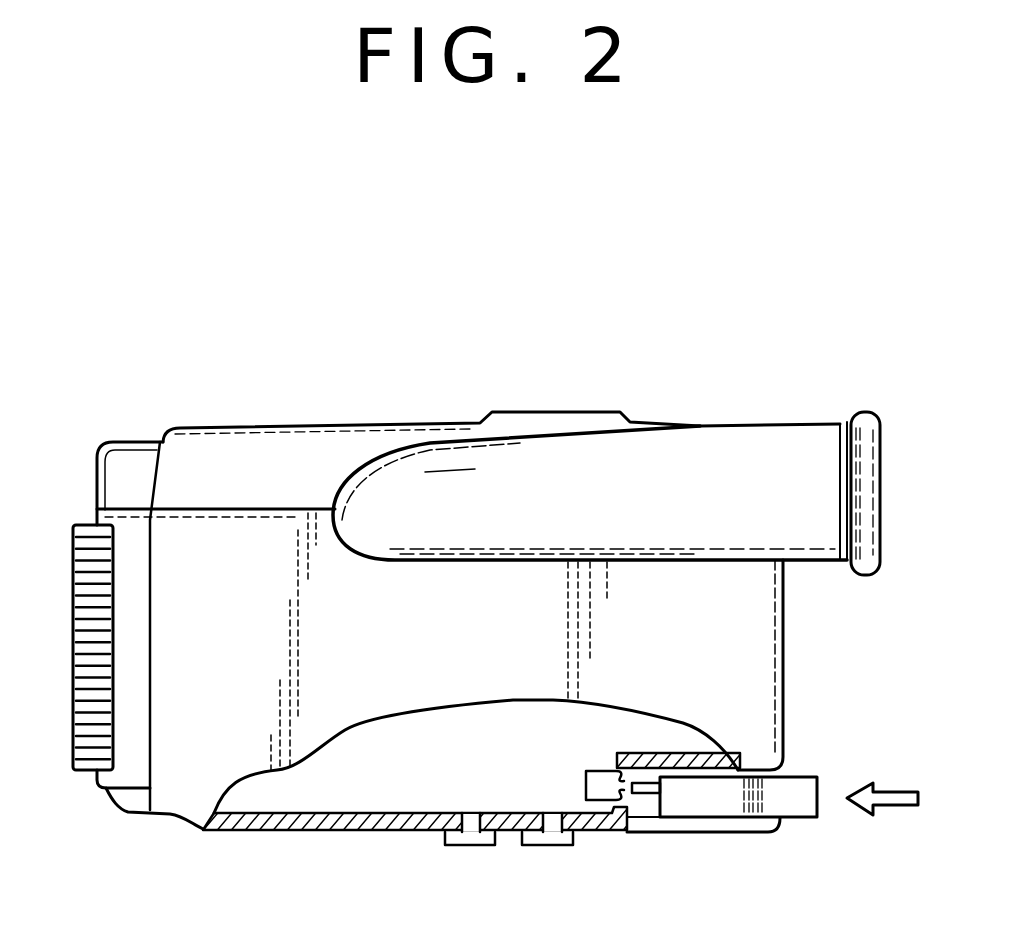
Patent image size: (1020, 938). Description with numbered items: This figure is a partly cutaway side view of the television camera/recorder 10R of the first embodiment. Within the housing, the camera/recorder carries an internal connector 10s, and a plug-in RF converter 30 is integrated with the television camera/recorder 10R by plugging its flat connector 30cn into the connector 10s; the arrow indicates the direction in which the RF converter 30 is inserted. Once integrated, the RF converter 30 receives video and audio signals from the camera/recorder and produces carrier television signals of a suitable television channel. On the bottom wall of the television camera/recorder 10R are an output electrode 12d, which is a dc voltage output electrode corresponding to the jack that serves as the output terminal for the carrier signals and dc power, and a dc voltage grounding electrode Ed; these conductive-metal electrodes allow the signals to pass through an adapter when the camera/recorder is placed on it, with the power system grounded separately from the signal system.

The television camera/recorder 10R is at (455, 342).
The internal connector 10s is at (585, 792).
The output electrode 12d is at (468, 847).
The dc voltage grounding electrode Ed is at (547, 847).
The flat connector 30cn is at (641, 795).
The plug-in RF converter 30 is at (797, 800).